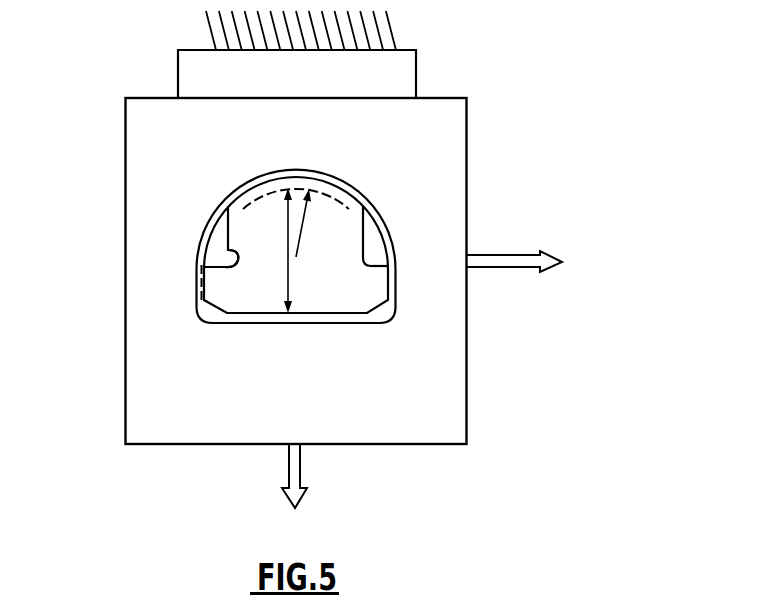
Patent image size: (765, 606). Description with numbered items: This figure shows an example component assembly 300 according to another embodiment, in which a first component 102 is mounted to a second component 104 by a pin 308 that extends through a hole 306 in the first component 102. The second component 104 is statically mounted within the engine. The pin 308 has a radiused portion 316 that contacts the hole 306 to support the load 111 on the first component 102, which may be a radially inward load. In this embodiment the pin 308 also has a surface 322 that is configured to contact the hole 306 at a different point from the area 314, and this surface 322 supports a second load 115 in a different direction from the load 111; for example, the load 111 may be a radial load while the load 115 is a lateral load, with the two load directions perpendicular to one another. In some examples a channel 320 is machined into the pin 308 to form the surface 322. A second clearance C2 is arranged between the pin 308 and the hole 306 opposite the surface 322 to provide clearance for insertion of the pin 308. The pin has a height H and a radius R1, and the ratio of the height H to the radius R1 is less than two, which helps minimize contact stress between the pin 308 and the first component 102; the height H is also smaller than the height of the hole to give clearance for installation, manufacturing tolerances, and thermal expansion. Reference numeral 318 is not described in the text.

The component assembly 300 is at (575, 50).
The first component 102 is at (452, 122).
The second component 104 is at (400, 68).
The load 111 is at (303, 500).
The second load 115 is at (543, 270).
The hole 306 is at (388, 315).
The pin 308 is at (365, 287).
The area 314 is at (283, 178).
The radiused portion 316 is at (272, 192).
The base 318 is at (259, 313).
The channel 320 is at (221, 261).
The surface 322 is at (201, 283).
The height H is at (290, 268).
The radius R1 is at (305, 222).
The second clearance C2 is at (389, 277).